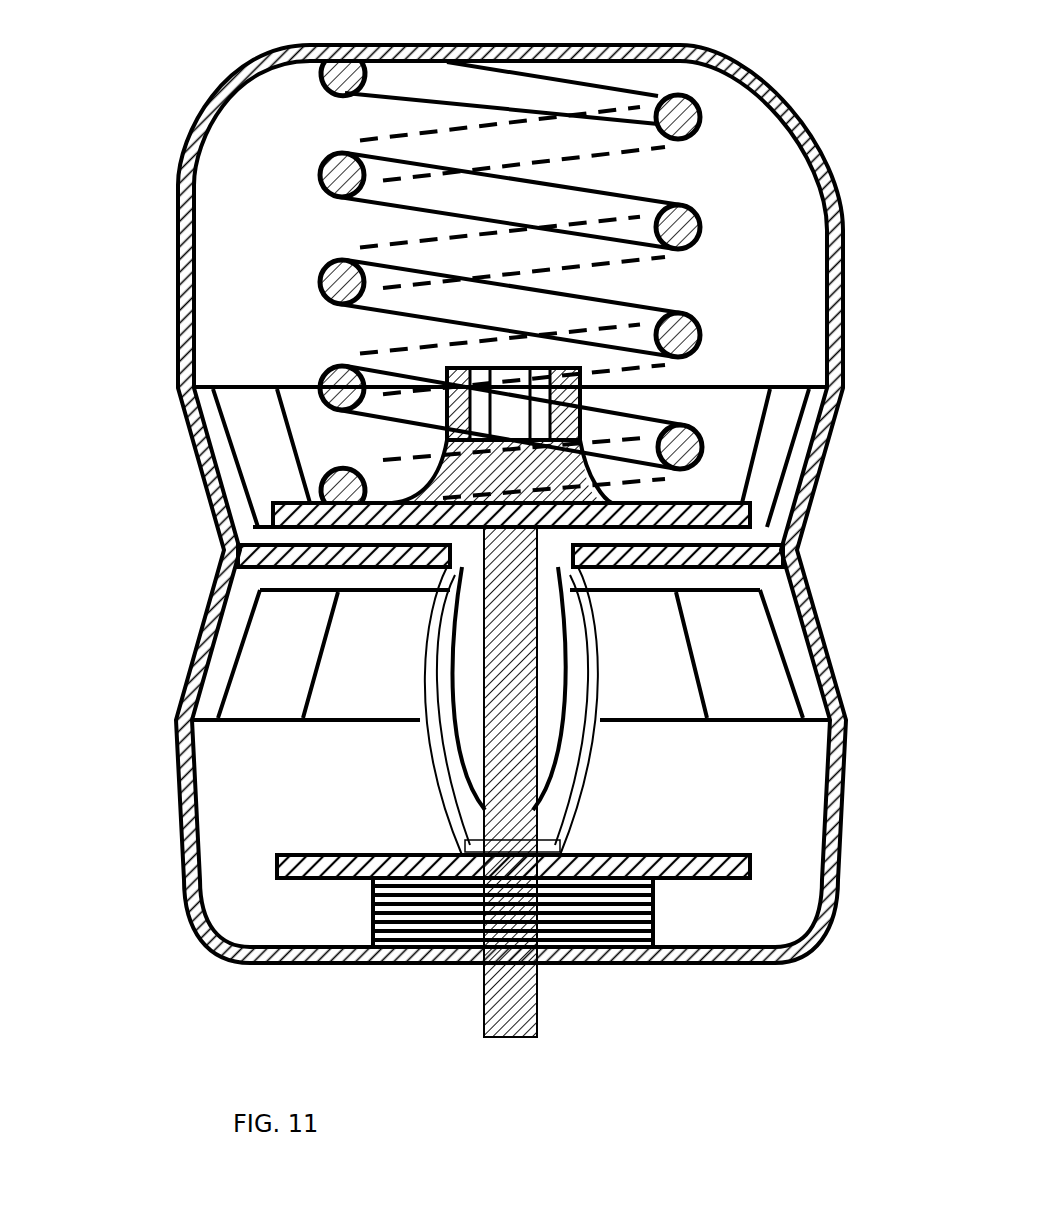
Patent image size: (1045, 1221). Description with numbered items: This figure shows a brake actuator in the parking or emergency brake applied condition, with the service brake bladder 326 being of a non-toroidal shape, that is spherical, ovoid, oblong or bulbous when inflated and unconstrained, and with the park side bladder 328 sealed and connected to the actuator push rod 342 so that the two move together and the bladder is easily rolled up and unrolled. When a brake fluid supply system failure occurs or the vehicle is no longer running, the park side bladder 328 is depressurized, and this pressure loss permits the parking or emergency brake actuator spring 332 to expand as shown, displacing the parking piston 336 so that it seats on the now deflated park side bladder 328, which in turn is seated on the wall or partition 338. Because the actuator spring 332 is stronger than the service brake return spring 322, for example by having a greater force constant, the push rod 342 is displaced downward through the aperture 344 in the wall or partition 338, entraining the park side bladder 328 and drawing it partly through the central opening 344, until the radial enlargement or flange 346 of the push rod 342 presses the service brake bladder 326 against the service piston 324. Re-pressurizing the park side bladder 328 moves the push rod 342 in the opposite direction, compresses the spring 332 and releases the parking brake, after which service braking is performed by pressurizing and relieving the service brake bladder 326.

The service brake return spring 322 is at (653, 917).
The service piston 324 is at (700, 857).
The service brake bladder 326 is at (593, 760).
The park side bladder 328 is at (463, 787).
The parking or emergency brake actuator spring 332 is at (697, 246).
The parking piston 336 is at (743, 497).
The wall or partition 338 is at (285, 556).
The actuator push rod 342 is at (487, 730).
The aperture 344 is at (440, 563).
The radial enlargement or flange 346 is at (553, 828).